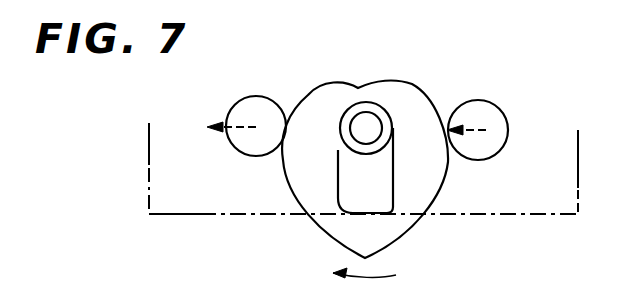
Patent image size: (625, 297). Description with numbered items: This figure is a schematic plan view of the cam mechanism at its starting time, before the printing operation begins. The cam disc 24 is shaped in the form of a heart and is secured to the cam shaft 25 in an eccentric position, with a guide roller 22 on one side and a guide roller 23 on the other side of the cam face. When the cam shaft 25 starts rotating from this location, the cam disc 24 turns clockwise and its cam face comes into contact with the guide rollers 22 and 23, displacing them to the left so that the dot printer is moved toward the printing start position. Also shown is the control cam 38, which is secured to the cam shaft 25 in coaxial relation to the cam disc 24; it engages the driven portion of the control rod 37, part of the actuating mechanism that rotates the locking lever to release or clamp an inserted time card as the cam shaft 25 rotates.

The guide roller 22 is at (257, 103).
The guide roller 23 is at (477, 100).
The cam disc 24 is at (420, 90).
The cam shaft 25 is at (367, 122).
The control rod 37 is at (233, 215).
The control cam 38 is at (338, 163).